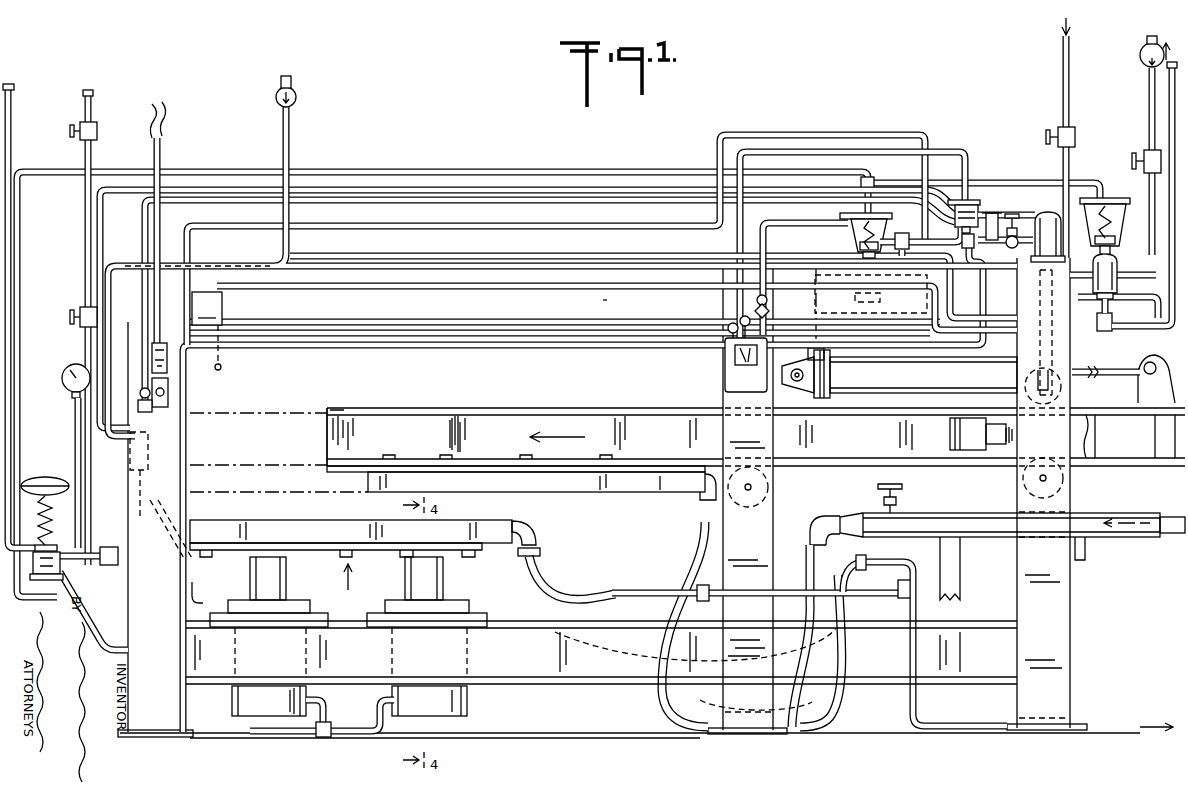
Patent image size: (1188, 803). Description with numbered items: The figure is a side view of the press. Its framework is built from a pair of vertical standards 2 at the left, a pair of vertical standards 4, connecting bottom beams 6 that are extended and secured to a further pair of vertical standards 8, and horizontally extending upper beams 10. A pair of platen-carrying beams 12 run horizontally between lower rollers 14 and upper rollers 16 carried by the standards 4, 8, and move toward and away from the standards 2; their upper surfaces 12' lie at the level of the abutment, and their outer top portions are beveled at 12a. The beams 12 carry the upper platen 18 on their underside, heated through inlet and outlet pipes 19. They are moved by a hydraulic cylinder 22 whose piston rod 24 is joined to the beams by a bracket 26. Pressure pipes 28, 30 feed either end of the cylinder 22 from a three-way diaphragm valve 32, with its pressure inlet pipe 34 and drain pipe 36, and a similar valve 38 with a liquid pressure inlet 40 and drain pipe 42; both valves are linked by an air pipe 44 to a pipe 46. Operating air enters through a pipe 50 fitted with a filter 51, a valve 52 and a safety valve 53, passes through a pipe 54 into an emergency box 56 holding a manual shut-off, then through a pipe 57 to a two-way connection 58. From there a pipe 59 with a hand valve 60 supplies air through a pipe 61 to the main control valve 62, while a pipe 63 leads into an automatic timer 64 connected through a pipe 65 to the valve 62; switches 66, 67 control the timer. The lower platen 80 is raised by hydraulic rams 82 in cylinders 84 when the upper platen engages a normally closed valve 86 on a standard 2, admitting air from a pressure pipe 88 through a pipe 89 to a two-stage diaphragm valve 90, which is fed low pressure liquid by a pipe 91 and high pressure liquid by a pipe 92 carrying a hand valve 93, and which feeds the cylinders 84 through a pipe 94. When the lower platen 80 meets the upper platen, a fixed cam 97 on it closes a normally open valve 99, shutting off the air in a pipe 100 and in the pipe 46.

The vertical standards 2 is at (165, 450).
The vertical standards 4 is at (778, 505).
The bottom beams 6 is at (597, 684).
The vertical standards 8 is at (1058, 597).
The upper beams 10 is at (603, 300).
The platen-carrying beams 12 is at (525, 420).
The beveled top portion 12a is at (338, 410).
The upper surfaces 12' is at (466, 413).
The lower rollers 14 is at (1062, 497).
The upper rollers 16 is at (1032, 378).
The upper platen 18 is at (606, 498).
The inlet and outlet pipes 19 is at (702, 510).
The cylinder 22 is at (935, 381).
The piston rod 24 is at (1088, 370).
The bracket 26 is at (1142, 384).
The pressure pipe 28 is at (809, 337).
The pressure pipe 30 is at (1055, 343).
The three-way diaphragm valve 32 is at (845, 212).
The pressure inlet pipe 34 is at (1152, 307).
The drain pipe 36 is at (1156, 340).
The valve 38 is at (1120, 204).
The liquid pressure inlet 40 is at (1148, 88).
The drain pipe 42 is at (1170, 110).
The air pipe 44 is at (1028, 183).
The pipe 46 is at (338, 172).
The pipe 50 is at (1063, 60).
The filter 51 is at (1050, 212).
The valve 52 is at (1014, 214).
The safety valve 53 is at (995, 213).
The pipe 54 is at (528, 286).
The emergency box 56 is at (207, 331).
The pipe 57 is at (460, 226).
The two-way connection 58 is at (910, 246).
The pipe 59 is at (494, 256).
The hand valve 60 is at (145, 413).
The pipe 61 is at (375, 190).
The main control valve 62 is at (975, 200).
The pipe 63 is at (826, 232).
The automatic timer 64 is at (746, 354).
The pipe 65 is at (738, 238).
The switch 66 is at (168, 358).
The switch 67 is at (168, 390).
The lower platen 80 is at (318, 528).
The hydraulic rams 82 is at (279, 576).
The cylinders 84 is at (238, 700).
The valve 86 is at (172, 488).
The pressure pipe 88 is at (413, 200).
The pipe 89 is at (72, 470).
The two-stage diaphragm valve 90 is at (50, 465).
The pipe 91 is at (94, 102).
The pipe 92 is at (292, 126).
The hand operated valve 93 is at (297, 97).
The pipe 94 is at (267, 737).
The fixed cam 97 is at (198, 596).
The valve 99 is at (165, 532).
The pipe 100 is at (298, 357).